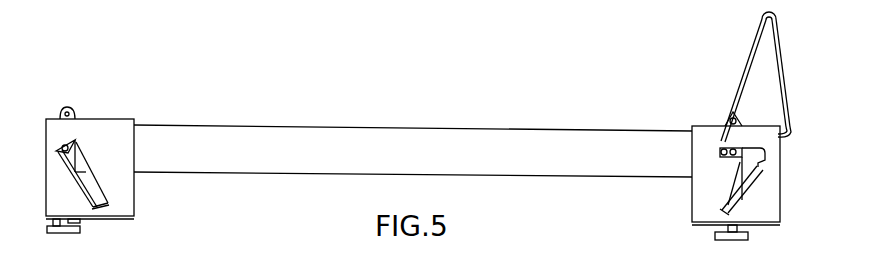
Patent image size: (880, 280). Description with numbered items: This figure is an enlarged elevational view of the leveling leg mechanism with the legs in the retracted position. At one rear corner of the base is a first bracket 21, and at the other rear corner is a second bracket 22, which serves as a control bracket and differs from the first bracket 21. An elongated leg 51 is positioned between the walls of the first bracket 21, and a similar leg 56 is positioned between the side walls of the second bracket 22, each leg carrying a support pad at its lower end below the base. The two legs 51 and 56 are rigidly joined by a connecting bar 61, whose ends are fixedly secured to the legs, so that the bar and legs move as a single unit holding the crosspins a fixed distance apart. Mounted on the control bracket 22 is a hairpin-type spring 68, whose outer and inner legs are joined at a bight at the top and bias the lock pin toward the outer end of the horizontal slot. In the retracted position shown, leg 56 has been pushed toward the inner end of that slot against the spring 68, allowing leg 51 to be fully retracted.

The first bracket 21 is at (105, 138).
The second bracket 22 is at (708, 138).
The elongated leg 51 is at (77, 223).
The leg 56 is at (748, 228).
The connecting bar 61 is at (440, 147).
The hairpin-type spring 68 is at (758, 44).